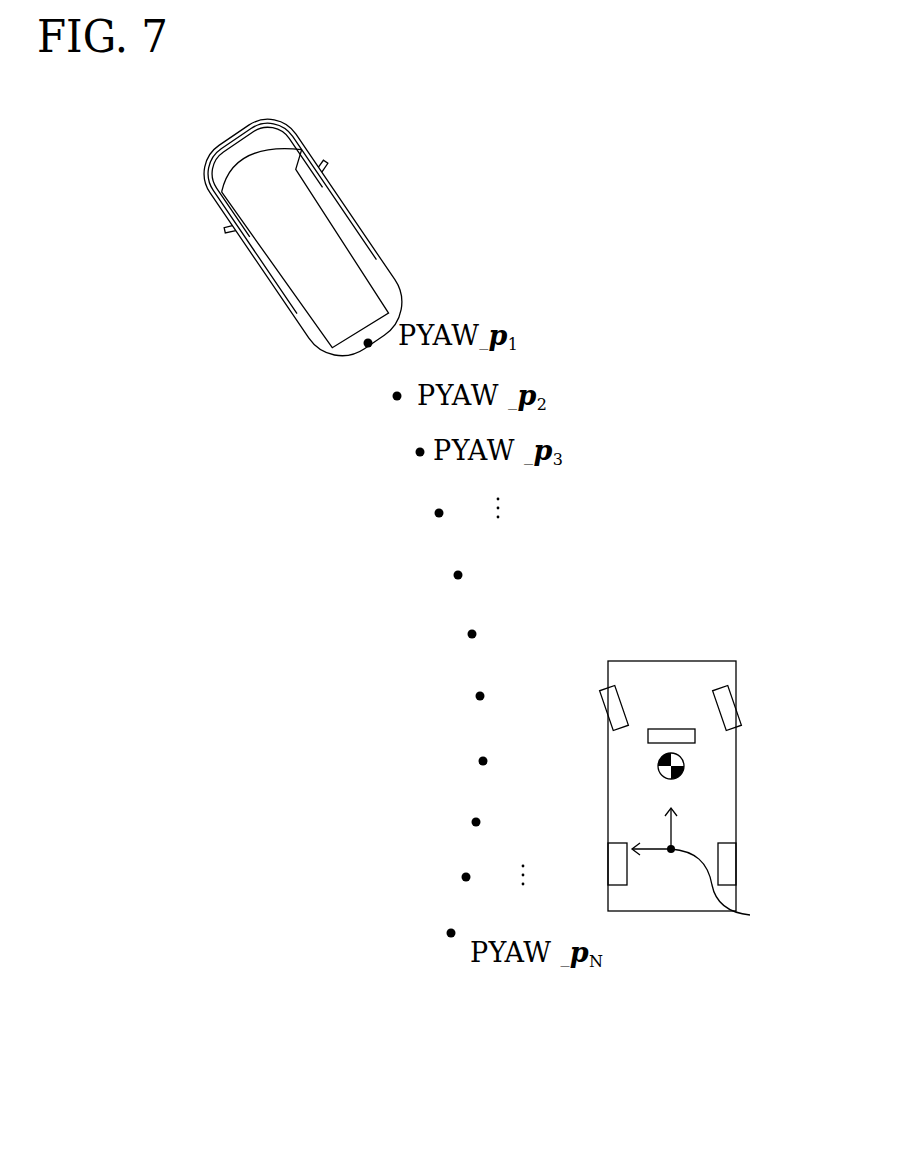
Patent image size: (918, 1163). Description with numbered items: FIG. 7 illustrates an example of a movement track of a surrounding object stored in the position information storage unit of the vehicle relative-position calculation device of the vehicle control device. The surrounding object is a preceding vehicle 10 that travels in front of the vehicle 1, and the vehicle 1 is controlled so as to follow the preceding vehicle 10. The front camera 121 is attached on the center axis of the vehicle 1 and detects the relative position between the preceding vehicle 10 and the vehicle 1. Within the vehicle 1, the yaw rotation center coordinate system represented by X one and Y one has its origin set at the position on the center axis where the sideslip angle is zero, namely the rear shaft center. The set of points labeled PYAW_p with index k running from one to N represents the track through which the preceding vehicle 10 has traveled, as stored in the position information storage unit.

The preceding vehicle 10 is at (362, 228).
The vehicle 1 is at (736, 677).
The front camera 121 is at (645, 737).